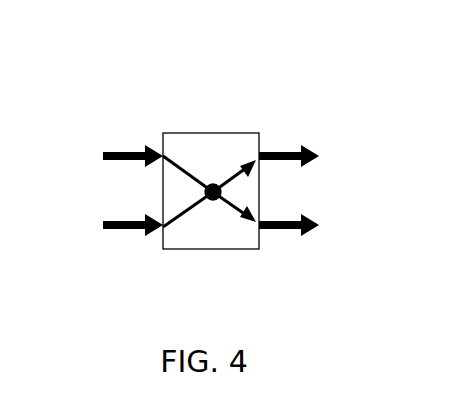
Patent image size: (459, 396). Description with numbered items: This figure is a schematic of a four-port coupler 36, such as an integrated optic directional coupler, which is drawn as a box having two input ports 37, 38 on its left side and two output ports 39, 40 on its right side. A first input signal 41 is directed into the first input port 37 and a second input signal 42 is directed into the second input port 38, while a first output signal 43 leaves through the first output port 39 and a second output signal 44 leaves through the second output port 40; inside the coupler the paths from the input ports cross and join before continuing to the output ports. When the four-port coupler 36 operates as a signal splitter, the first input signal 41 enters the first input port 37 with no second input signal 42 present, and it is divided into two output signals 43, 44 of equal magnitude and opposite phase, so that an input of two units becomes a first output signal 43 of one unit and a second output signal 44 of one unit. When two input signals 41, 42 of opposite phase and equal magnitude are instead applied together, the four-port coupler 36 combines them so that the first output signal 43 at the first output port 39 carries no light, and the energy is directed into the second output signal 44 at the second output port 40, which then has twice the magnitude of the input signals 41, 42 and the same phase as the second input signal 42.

The 4-port coupler 36 is at (211, 133).
The first input port 37 is at (162, 156).
The second input port 38 is at (162, 230).
The first output port 39 is at (259, 157).
The second output port 40 is at (260, 230).
The first input signal 41 is at (113, 150).
The second input signal 42 is at (113, 228).
The first output signal 43 is at (280, 150).
The second output signal 44 is at (282, 232).